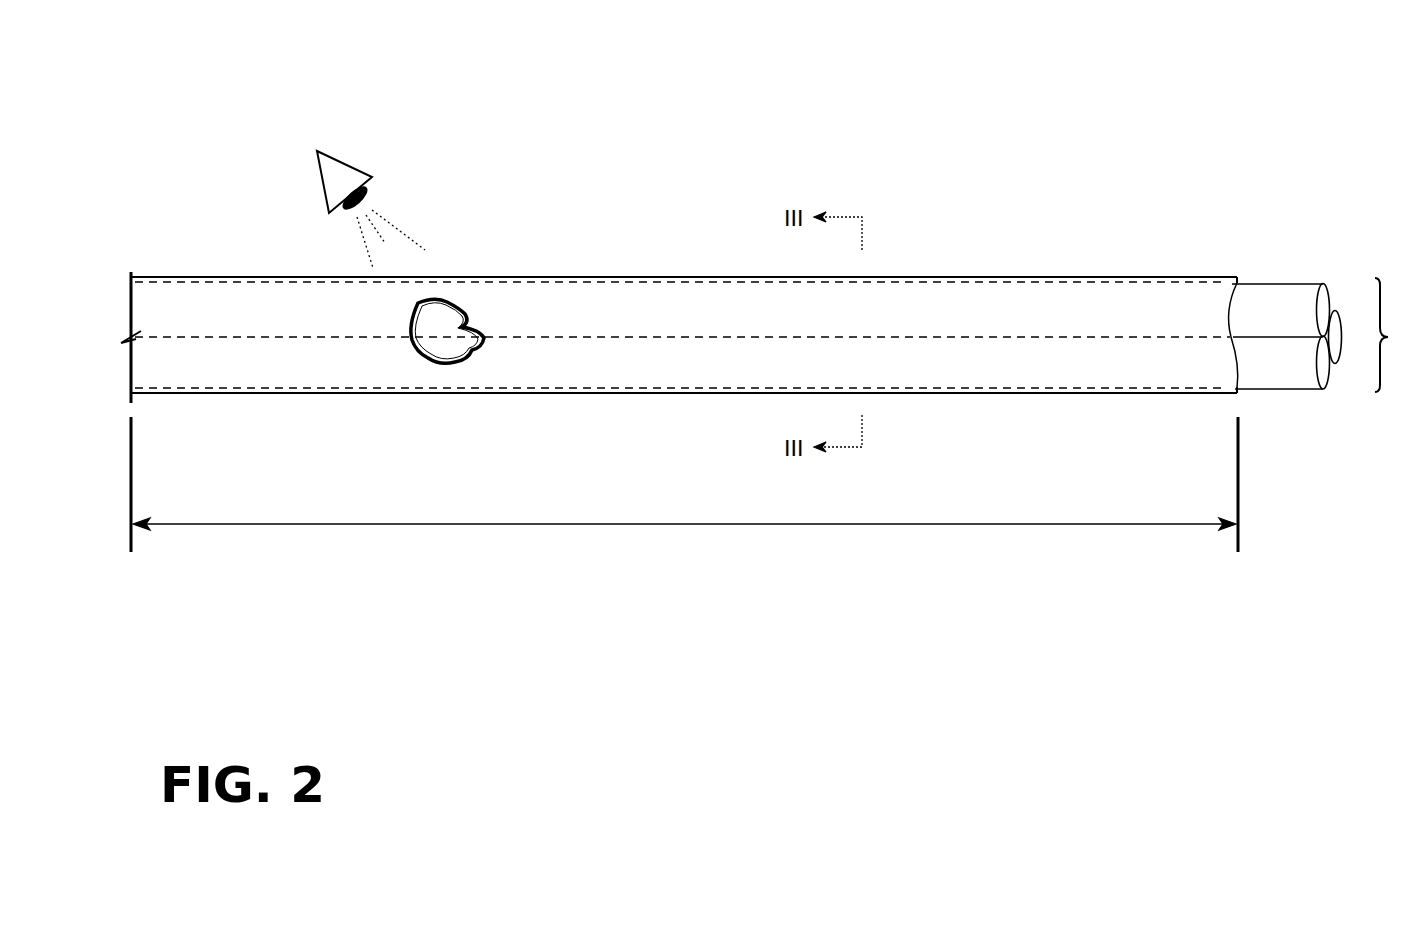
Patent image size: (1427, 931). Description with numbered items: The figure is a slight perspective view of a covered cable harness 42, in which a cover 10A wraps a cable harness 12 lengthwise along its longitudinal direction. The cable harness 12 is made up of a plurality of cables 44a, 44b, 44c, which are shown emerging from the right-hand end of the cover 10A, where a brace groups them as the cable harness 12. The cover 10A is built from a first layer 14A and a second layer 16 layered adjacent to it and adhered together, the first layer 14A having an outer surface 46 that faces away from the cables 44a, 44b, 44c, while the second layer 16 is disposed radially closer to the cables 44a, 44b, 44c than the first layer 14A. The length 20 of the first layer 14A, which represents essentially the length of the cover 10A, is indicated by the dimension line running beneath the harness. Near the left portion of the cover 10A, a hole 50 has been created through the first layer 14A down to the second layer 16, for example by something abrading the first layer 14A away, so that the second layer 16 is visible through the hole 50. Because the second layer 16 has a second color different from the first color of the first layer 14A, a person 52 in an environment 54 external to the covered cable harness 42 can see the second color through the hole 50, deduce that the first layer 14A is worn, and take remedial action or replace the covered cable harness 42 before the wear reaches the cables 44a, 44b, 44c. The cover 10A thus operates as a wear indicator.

The cover 10A is at (228, 276).
The cable harness 12 is at (1398, 335).
The first layer 14A is at (968, 308).
The second layer 16 is at (441, 316).
The length 20 is at (726, 527).
The covered cable harness 42 is at (143, 157).
The cable 44a is at (1297, 285).
The cable 44b is at (1302, 393).
The cable 44c is at (1342, 320).
The outer surface 46 is at (1103, 310).
The hole 50 is at (465, 314).
The person 52 is at (350, 165).
The environment 54 is at (275, 143).